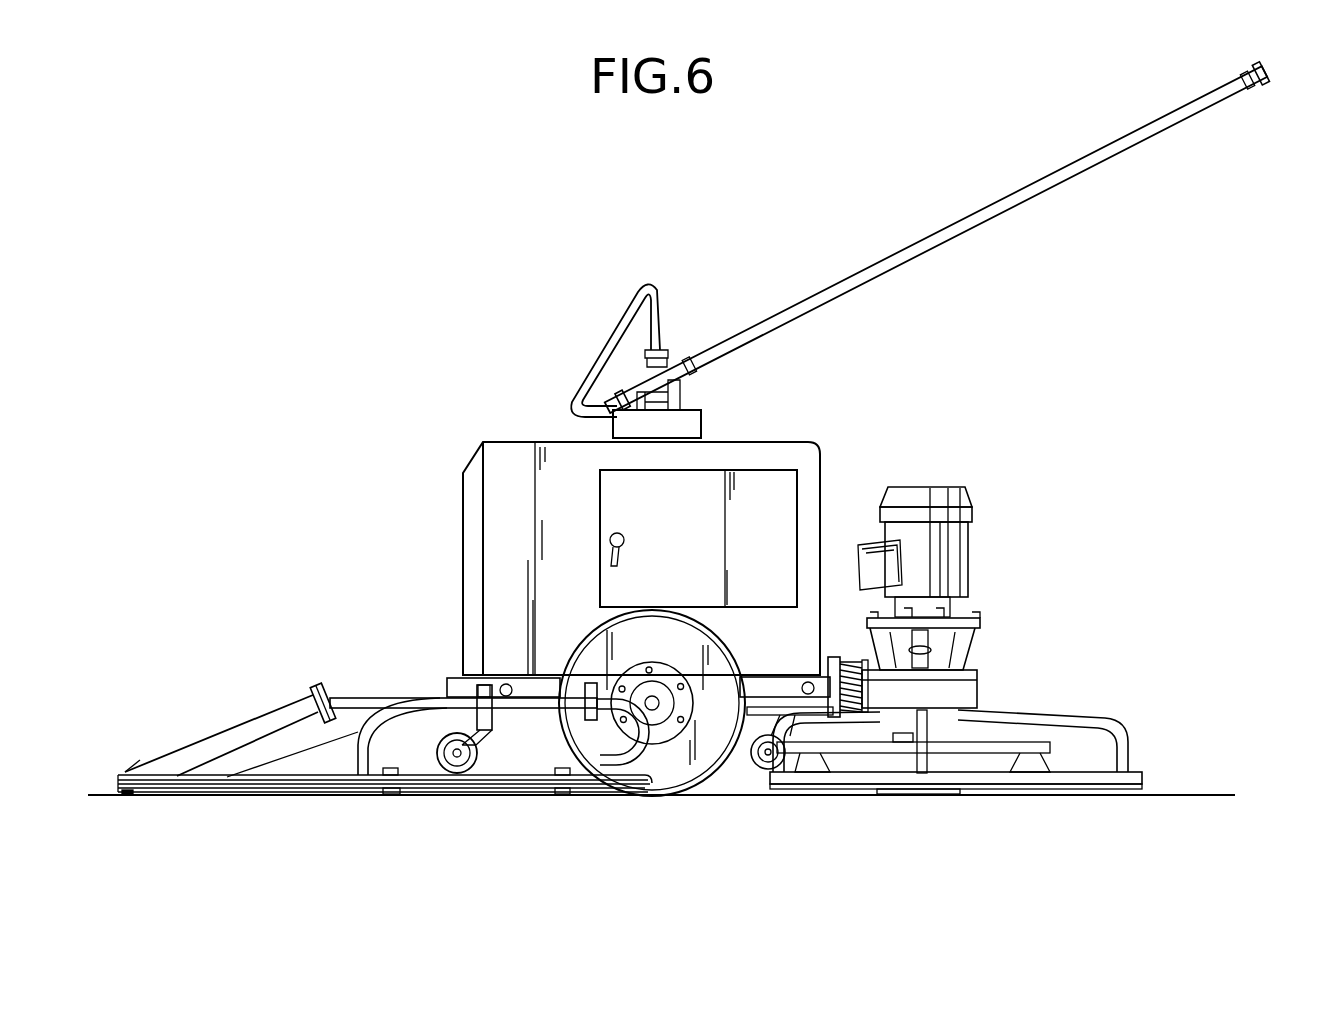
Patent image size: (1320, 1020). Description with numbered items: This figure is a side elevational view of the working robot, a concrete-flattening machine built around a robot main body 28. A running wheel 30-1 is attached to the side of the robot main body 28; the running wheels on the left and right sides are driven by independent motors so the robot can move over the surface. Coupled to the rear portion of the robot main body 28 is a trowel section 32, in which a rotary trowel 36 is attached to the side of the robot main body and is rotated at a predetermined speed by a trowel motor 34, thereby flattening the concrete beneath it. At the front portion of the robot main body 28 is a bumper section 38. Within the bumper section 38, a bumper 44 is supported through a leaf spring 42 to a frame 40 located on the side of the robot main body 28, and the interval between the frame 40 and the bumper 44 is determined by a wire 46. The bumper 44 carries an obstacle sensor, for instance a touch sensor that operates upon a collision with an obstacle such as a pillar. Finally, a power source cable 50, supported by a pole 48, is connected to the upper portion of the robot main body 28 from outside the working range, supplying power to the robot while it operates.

The robot main body 28 is at (502, 442).
The running wheel 30-1 is at (664, 785).
The trowel section 32 is at (958, 746).
The trowel motor 34 is at (968, 550).
The rotary trowel 36 is at (875, 796).
The bumper section 38 is at (385, 755).
The frame 40 is at (360, 697).
The leaf spring 42 is at (230, 737).
The bumper 44 is at (355, 788).
The wire 46 is at (282, 777).
The pole 48 is at (760, 337).
The power source cable 50 is at (618, 318).